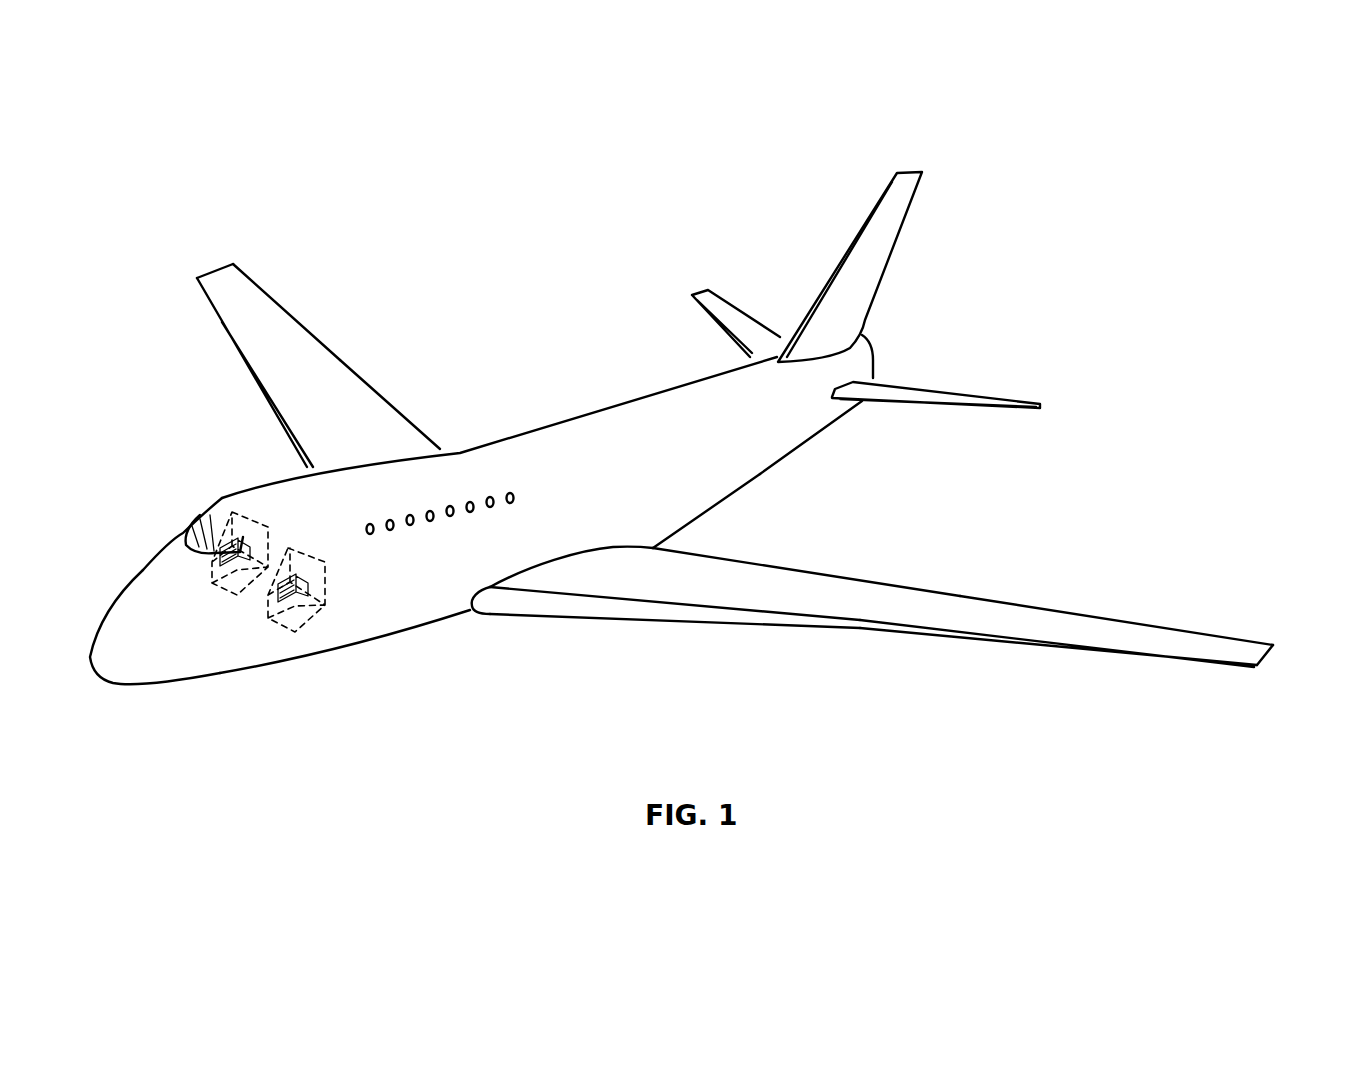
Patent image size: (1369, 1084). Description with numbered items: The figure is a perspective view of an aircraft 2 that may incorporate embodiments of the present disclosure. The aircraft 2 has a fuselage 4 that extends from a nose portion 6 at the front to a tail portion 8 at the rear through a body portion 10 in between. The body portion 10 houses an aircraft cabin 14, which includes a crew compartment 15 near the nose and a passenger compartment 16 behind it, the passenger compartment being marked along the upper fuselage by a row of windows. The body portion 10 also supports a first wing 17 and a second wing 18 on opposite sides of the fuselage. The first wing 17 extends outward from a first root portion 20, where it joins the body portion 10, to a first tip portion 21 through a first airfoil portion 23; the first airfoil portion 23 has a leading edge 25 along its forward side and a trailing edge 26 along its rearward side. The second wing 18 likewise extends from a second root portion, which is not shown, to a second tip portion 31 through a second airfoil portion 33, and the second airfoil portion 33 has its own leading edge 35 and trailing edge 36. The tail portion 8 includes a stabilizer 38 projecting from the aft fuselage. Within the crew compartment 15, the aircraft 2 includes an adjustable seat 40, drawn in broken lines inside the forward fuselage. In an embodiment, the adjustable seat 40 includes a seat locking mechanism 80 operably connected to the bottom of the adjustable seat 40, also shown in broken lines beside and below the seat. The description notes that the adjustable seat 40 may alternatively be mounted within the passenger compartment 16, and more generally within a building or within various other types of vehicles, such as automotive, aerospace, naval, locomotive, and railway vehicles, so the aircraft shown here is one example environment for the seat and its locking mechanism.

The aircraft 2 is at (106, 575).
The fuselage 4 is at (226, 660).
The nose portion 6 is at (110, 665).
The tail portion 8 is at (790, 443).
The body portion 10 is at (675, 518).
The aircraft cabin 14 is at (503, 560).
The crew compartment 15 is at (207, 523).
The passenger compartment 16 is at (558, 427).
The first wing 17 is at (870, 637).
The second wing 18 is at (229, 277).
The first root portion 20 is at (597, 553).
The first tip portion 21 is at (1270, 653).
The first airfoil portion 23 is at (805, 583).
The leading edge 25 is at (653, 612).
The trailing edge 26 is at (997, 600).
The second tip portion 31 is at (222, 265).
The second airfoil portion 33 is at (253, 303).
The leading edge 35 is at (222, 322).
The trailing edge 36 is at (300, 318).
The stabilizer 38 is at (940, 378).
The adjustable seat 40 is at (330, 573).
The seat locking mechanism 80 is at (332, 603).